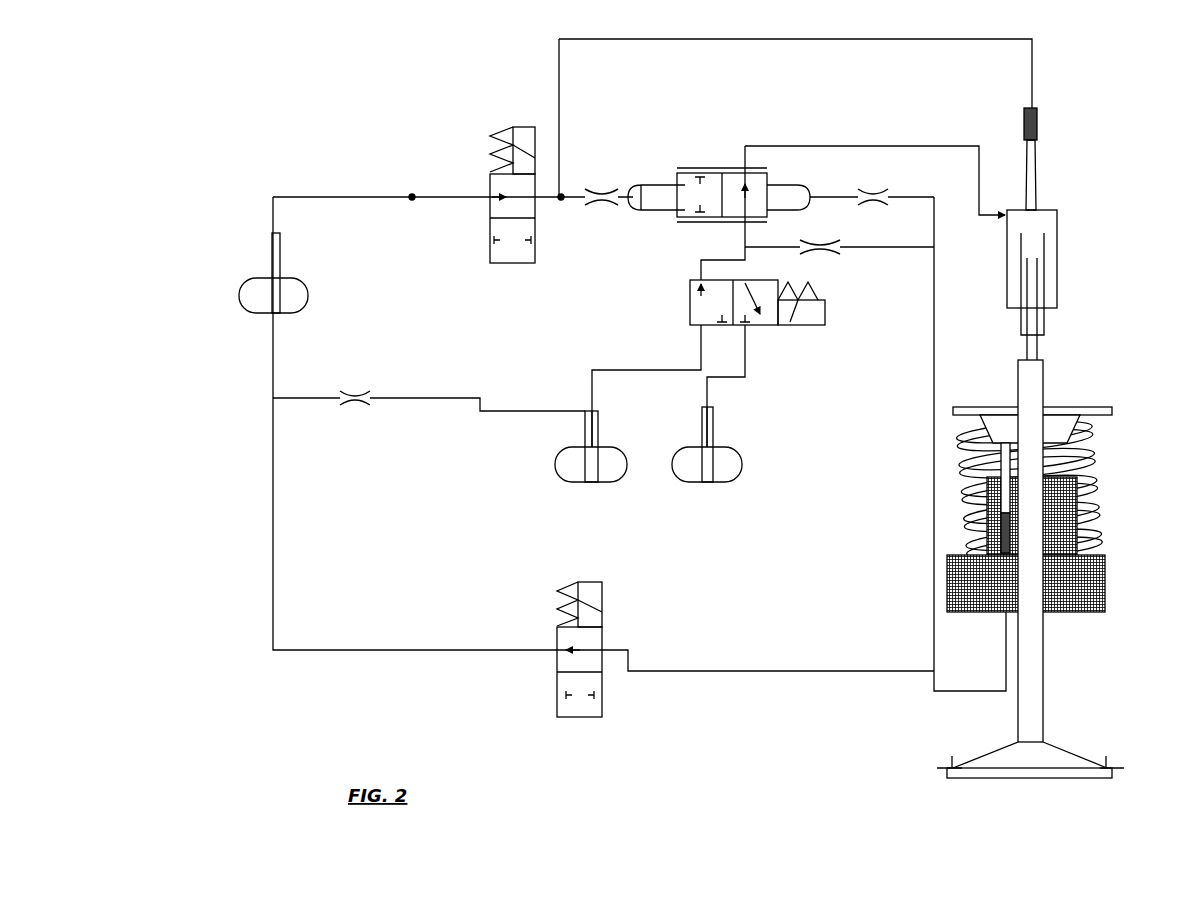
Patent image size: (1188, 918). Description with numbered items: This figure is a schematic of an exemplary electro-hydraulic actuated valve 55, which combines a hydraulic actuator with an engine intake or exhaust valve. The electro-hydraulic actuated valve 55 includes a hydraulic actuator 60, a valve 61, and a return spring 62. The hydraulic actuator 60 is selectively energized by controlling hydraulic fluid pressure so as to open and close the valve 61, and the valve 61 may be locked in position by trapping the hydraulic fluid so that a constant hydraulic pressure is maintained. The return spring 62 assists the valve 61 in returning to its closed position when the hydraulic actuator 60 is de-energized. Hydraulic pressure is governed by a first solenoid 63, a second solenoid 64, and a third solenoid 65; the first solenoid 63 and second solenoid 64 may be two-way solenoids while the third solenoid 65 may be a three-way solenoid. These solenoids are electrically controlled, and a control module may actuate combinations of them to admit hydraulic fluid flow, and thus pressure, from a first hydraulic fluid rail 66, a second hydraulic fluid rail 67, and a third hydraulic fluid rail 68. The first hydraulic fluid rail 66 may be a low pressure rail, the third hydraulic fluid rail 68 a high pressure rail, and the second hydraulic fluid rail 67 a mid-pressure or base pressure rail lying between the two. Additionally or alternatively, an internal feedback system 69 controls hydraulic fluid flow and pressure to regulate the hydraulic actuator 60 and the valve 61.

The electro-hydraulic actuated valve 55 is at (300, 68).
The hydraulic actuator 60 is at (1057, 258).
The valve 61 is at (1043, 718).
The return spring 62 is at (1098, 470).
The first solenoid 63 is at (602, 633).
The second solenoid 64 is at (513, 264).
The third solenoid 65 is at (690, 305).
The first hydraulic fluid rail 66 is at (313, 298).
The second hydraulic fluid rail 67 is at (592, 482).
The third hydraulic fluid rail 68 is at (708, 482).
The internal feedback system 69 is at (702, 170).